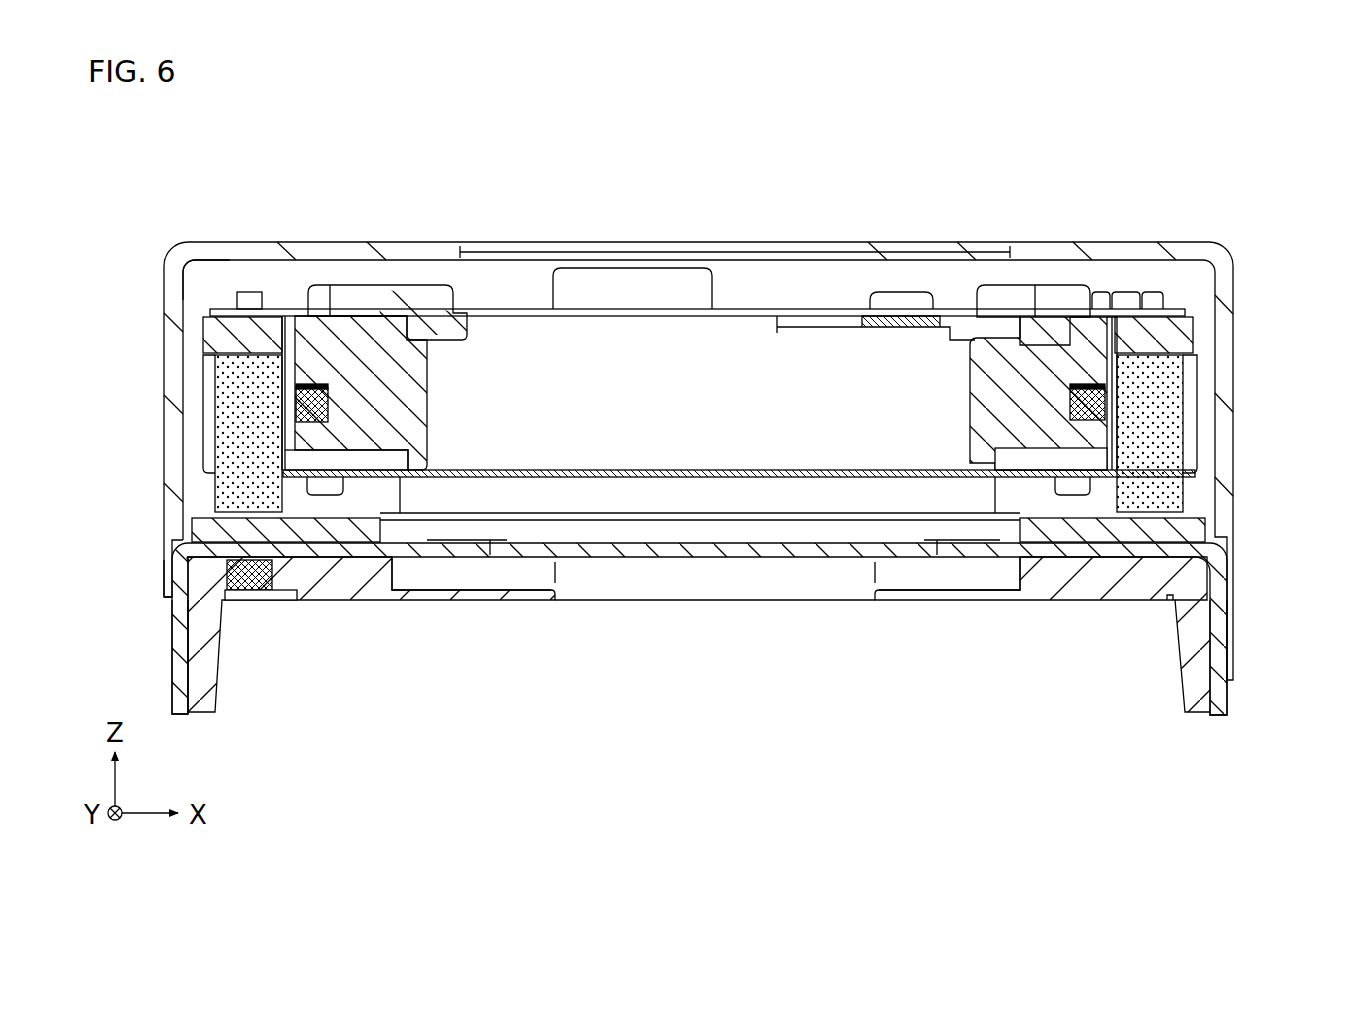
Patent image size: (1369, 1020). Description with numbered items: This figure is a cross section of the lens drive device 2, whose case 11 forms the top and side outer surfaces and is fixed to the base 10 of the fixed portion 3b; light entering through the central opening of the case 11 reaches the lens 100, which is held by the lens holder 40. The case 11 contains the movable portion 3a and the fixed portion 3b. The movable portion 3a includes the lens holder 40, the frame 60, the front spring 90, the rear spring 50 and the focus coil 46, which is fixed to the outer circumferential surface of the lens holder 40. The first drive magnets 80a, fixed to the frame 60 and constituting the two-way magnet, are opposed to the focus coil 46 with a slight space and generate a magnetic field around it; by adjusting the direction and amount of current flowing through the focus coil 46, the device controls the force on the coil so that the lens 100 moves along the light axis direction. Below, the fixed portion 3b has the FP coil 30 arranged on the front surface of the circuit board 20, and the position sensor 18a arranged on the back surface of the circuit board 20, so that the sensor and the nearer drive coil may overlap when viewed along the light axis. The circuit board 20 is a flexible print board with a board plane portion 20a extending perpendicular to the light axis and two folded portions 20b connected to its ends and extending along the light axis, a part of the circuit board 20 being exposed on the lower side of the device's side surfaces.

The lens drive device 2 is at (1230, 197).
The movable portion 3a is at (208, 294).
The fixed portion 3b is at (168, 552).
The base 10 is at (1150, 585).
The case 11 is at (1227, 364).
The position sensor 18a is at (230, 572).
The circuit board 20 is at (1226, 554).
The board plane portion 20a is at (293, 560).
The folded portion 20b is at (172, 645).
The FP coil 30 is at (223, 534).
The lens holder 40 is at (1072, 370).
The focus coil 46 is at (315, 400).
The rear spring 50 is at (1090, 481).
The frame 60 is at (1178, 332).
The first drive magnet 80a is at (240, 428).
The front spring 90 is at (1125, 296).
The lens 100 is at (895, 372).